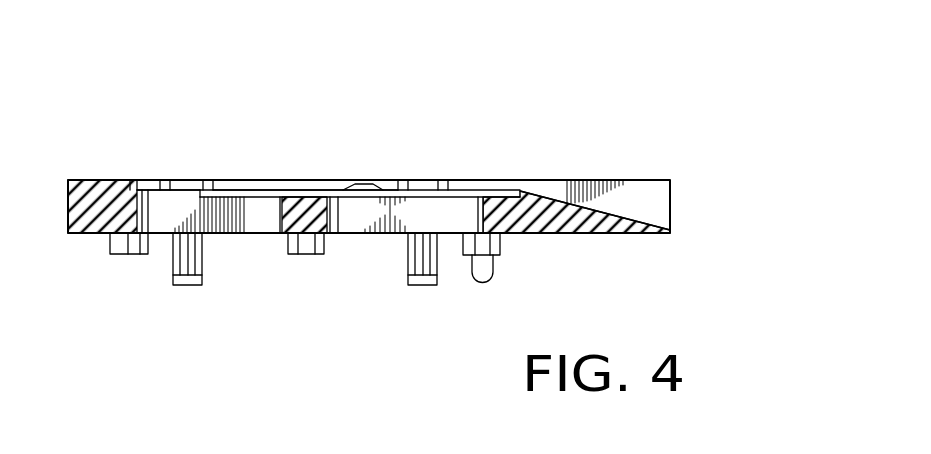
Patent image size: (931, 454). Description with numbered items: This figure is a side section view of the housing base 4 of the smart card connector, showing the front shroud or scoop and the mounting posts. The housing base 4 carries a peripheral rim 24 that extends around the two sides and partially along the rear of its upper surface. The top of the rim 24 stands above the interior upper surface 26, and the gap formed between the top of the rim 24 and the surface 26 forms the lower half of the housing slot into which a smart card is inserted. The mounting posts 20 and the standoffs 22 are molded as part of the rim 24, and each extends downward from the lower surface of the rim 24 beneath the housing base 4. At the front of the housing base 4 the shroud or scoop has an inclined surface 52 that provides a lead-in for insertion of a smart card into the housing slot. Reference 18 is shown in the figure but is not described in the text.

The housing base 4 is at (636, 92).
The sensing element 18 is at (370, 185).
The mounting posts 20 is at (188, 281).
The standoffs 22 is at (122, 251).
The peripheral rim 24 is at (227, 180).
The interior upper surface 26 is at (258, 190).
The inclined surface 52 is at (618, 219).